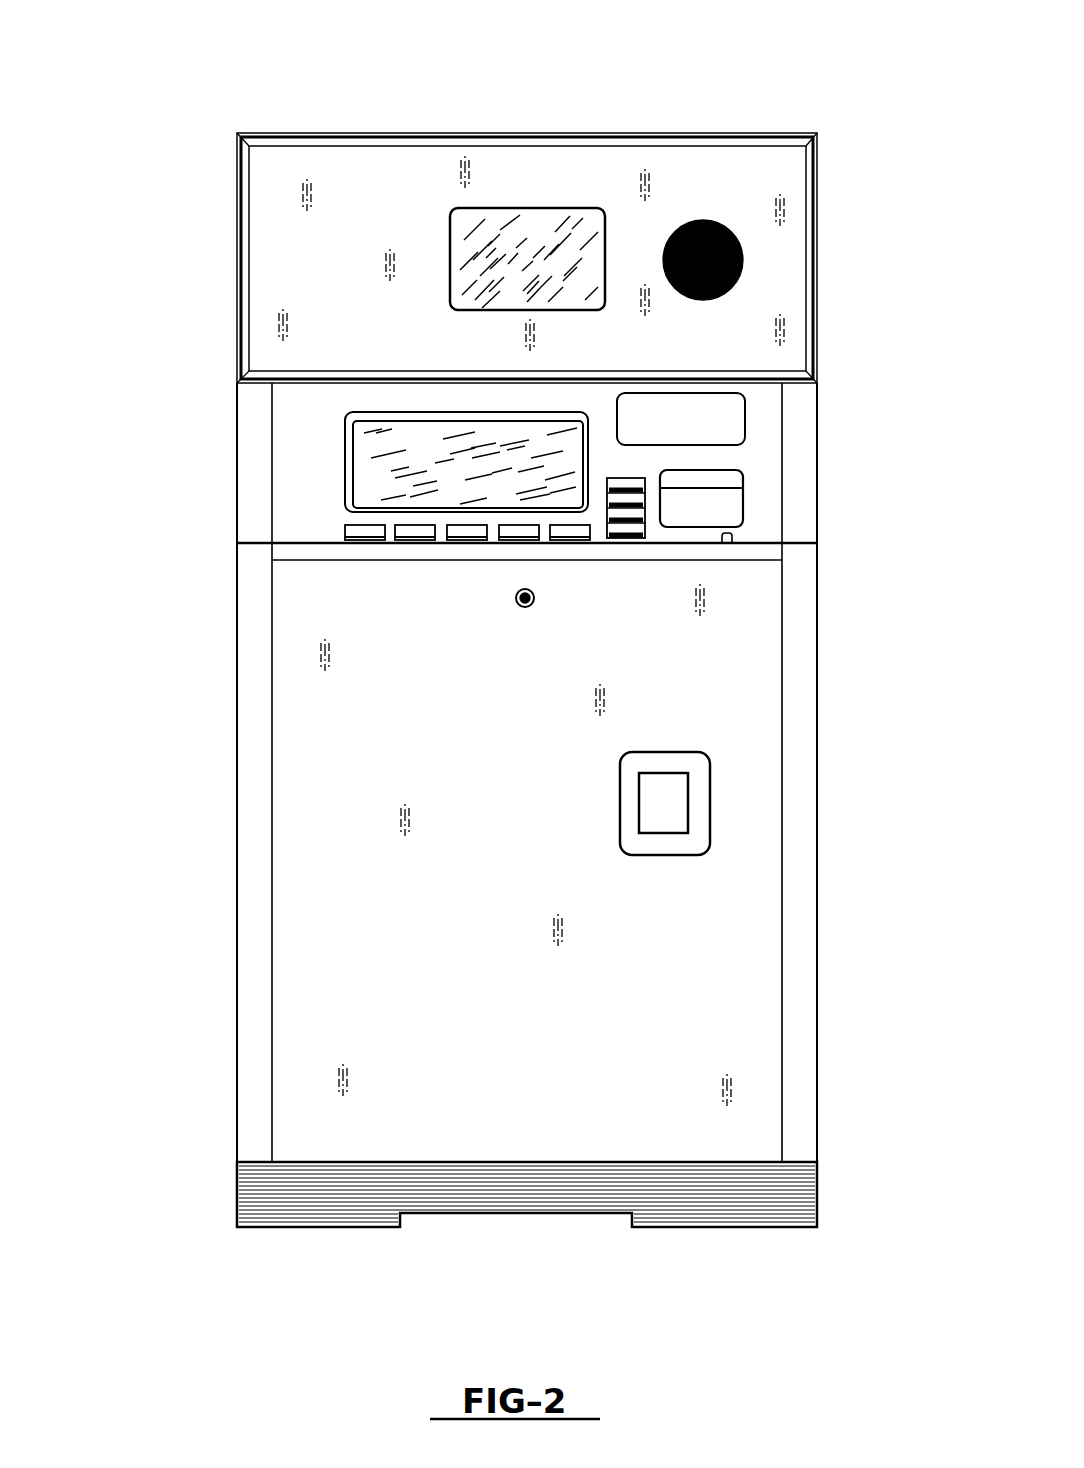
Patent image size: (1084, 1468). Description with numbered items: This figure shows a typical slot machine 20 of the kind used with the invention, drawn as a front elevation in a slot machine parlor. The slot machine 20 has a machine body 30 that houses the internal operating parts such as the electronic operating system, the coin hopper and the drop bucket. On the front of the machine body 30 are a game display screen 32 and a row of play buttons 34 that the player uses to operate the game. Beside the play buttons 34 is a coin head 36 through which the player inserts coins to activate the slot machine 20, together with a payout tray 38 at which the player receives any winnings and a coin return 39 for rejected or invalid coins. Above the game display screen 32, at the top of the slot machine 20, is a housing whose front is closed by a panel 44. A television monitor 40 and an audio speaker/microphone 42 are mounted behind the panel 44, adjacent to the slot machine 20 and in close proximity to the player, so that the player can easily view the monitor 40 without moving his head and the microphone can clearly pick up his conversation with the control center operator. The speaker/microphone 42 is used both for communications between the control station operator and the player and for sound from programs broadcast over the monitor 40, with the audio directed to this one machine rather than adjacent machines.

The slot machine 20 is at (298, 827).
The machine body 30 is at (430, 693).
The game display screen 32 is at (375, 437).
The play buttons 34 is at (358, 537).
The coin head 36 is at (722, 543).
The payout tray 38 is at (716, 509).
The coin return 39 is at (700, 833).
The television monitor 40 is at (535, 218).
The audio speaker/microphone 42 is at (743, 267).
The panel 44 is at (336, 170).